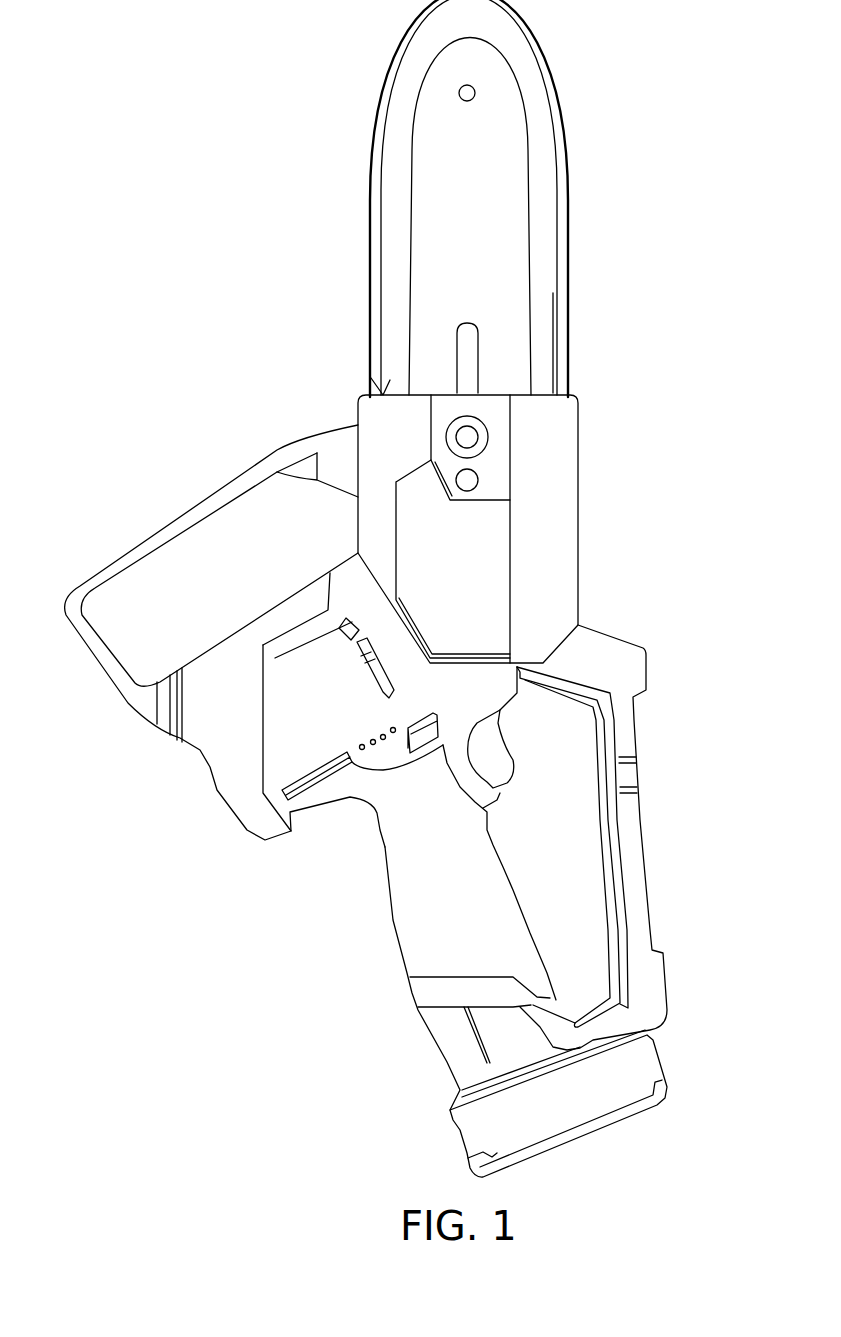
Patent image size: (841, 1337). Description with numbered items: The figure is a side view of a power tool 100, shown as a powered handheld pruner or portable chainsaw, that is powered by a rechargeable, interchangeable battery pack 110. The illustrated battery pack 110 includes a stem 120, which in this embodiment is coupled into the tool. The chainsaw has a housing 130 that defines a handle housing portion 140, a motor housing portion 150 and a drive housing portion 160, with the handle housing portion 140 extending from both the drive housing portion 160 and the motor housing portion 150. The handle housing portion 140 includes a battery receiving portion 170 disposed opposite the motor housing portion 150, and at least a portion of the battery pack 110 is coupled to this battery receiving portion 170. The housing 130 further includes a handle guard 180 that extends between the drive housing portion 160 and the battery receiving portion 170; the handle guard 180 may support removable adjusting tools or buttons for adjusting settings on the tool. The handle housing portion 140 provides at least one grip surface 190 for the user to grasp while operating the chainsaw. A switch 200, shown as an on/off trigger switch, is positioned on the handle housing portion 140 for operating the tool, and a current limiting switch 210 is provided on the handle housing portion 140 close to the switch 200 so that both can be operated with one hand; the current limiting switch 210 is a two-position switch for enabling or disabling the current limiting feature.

The power tool 100 is at (147, 90).
The battery pack 110 is at (457, 1120).
The stem 120 is at (455, 1057).
The housing 130 is at (147, 770).
The handle housing portion 140 is at (400, 927).
The motor housing portion 150 is at (287, 668).
The drive housing portion 160 is at (567, 532).
The battery receiving portion 170 is at (413, 993).
The handle guard 180 is at (628, 866).
The grip surface 190 is at (480, 878).
The switch 200 is at (500, 760).
The current limiting switch 210 is at (430, 722).